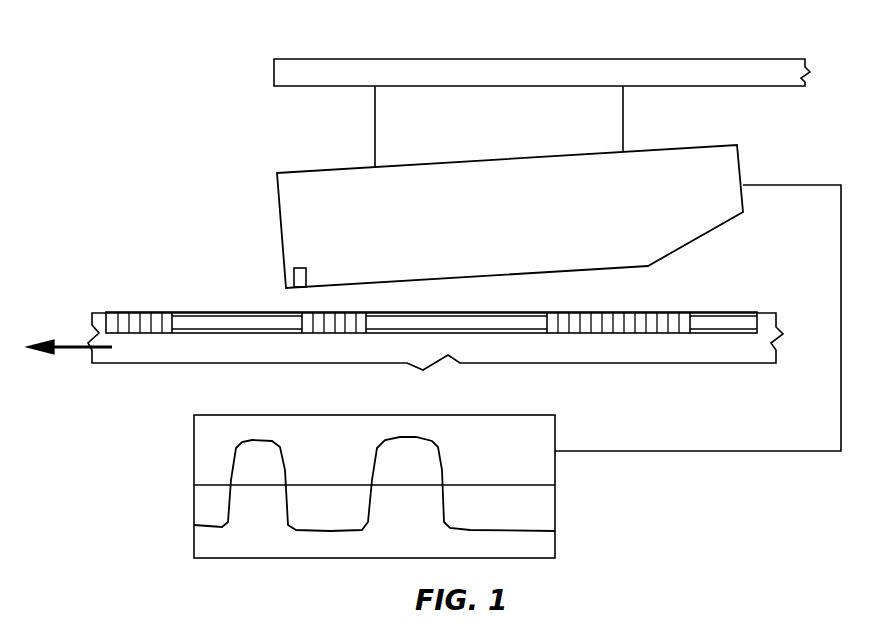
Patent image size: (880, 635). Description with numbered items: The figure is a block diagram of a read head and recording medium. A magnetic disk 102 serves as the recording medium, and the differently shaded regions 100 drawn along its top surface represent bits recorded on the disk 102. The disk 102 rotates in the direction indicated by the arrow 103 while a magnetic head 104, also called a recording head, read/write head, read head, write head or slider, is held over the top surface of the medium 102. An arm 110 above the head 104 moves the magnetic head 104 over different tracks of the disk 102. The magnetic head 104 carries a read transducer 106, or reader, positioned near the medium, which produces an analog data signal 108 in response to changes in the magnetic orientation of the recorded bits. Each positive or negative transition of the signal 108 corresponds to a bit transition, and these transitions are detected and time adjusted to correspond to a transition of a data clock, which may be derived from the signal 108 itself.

The differently shaded regions 100 is at (765, 302).
The magnetic disk 102 is at (92, 318).
The arrow 103 is at (60, 353).
The magnetic head 104 is at (279, 192).
The read transducer 106 is at (297, 268).
The analog data signal 108 is at (330, 532).
The arm 110 is at (709, 59).